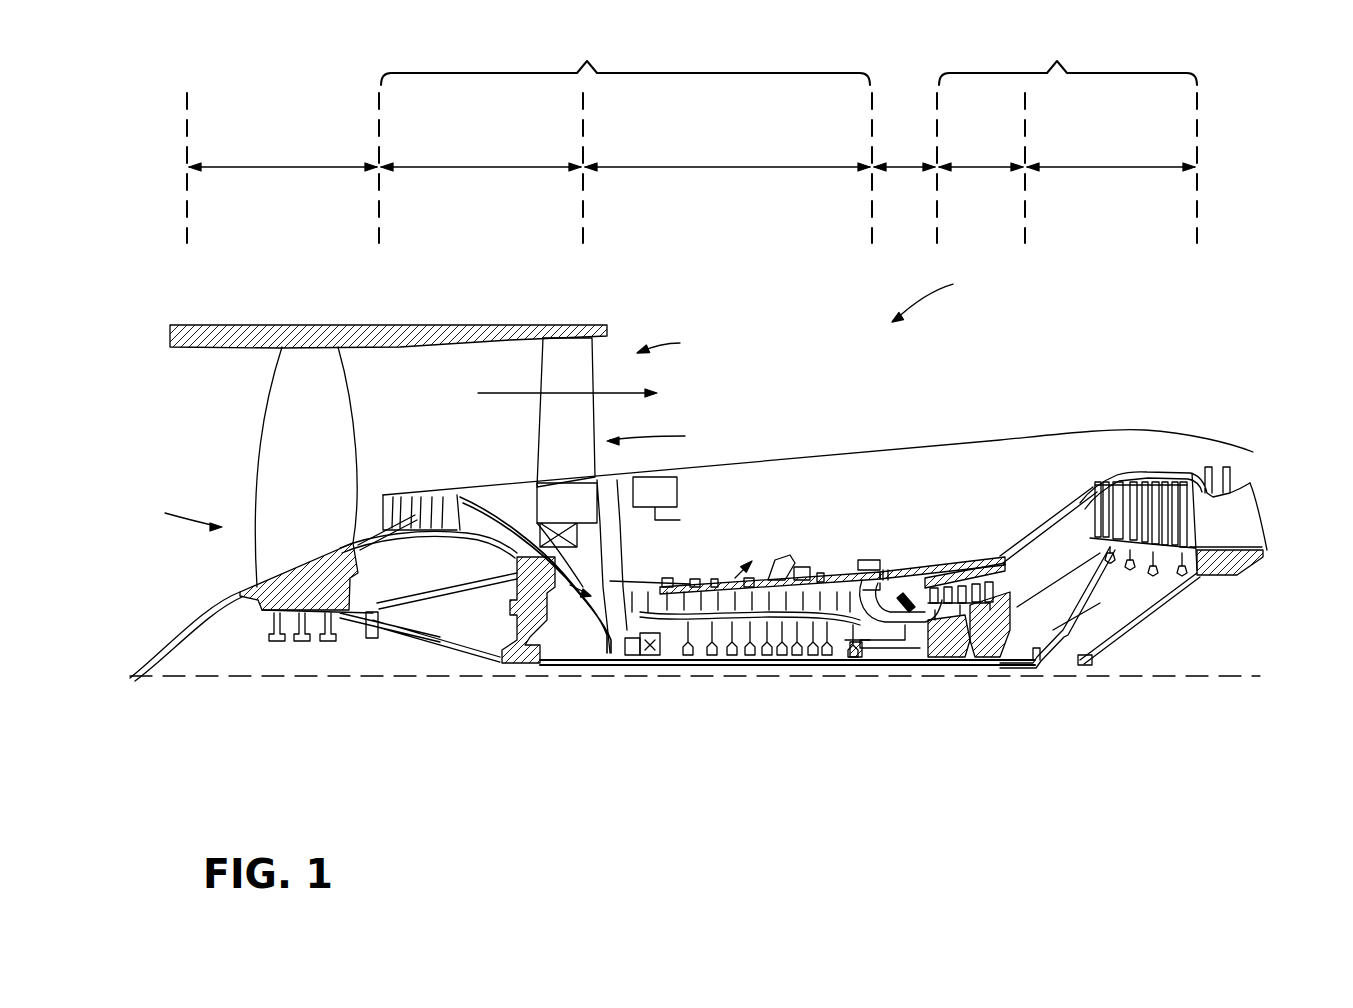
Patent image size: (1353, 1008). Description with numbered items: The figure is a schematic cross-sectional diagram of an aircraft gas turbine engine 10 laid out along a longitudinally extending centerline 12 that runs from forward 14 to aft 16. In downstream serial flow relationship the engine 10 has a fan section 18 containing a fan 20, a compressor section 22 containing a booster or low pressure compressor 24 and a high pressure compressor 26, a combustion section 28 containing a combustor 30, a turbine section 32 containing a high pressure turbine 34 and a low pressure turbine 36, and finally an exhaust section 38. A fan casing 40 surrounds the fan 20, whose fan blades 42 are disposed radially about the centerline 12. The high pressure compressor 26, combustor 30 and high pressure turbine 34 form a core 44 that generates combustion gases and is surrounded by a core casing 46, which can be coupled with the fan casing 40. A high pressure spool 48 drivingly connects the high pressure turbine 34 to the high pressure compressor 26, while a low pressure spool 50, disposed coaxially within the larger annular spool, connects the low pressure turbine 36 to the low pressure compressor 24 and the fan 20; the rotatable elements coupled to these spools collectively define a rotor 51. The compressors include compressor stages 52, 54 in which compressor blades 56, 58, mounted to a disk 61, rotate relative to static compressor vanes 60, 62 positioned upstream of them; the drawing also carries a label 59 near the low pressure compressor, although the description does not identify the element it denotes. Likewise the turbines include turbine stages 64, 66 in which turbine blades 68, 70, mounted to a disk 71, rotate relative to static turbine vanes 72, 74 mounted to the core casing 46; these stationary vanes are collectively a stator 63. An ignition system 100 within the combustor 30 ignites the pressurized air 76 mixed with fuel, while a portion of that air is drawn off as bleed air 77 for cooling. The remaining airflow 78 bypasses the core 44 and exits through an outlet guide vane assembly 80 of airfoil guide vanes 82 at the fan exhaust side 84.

The engine 10 is at (935, 295).
The centerline 12 is at (288, 683).
The forward 14 is at (138, 453).
The aft 16 is at (1280, 533).
The fan section 18 is at (283, 156).
The fan 20 is at (180, 516).
The compressor section 22 is at (625, 58).
The low pressure compressor 24 is at (481, 156).
The high pressure compressor 26 is at (727, 156).
The combustion section 28 is at (904, 150).
The combustor 30 is at (907, 587).
The turbine section 32 is at (1068, 58).
The high pressure turbine 34 is at (981, 156).
The low pressure turbine 36 is at (1111, 156).
The exhaust section 38 is at (1270, 492).
The fan casing 40 is at (420, 322).
The fan blades 42 is at (337, 400).
The core 44 is at (852, 488).
The core casing 46 is at (1073, 497).
The high pressure spool 48 is at (869, 683).
The low pressure spool 50 is at (520, 672).
The rotor 51 is at (470, 550).
The compressor stages 52 is at (372, 441).
The compressor stages 54 is at (710, 483).
The compressor blades 56 is at (393, 497).
The compressor blades 58 is at (667, 577).
The hub fairing 59 is at (410, 537).
The static compressor vanes 60 is at (410, 505).
The disk 61 is at (657, 657).
The static compressor vanes 62 is at (657, 562).
The stator 63 is at (633, 660).
The turbine stages 64 is at (933, 488).
The turbine stages 66 is at (1180, 378).
The turbine blades 68 is at (953, 610).
The turbine blades 70 is at (1192, 482).
The disk 71 is at (957, 680).
The static turbine vanes 72 is at (925, 590).
The static turbine vanes 74 is at (1168, 482).
The pressurized air 76 is at (590, 540).
The bleed air 77 is at (735, 583).
The airflow 78 is at (500, 390).
The outlet guide vane assembly 80 is at (659, 433).
The airfoil guide vanes 82 is at (545, 430).
The fan exhaust side 84 is at (669, 339).
The ignition system 100 is at (905, 615).